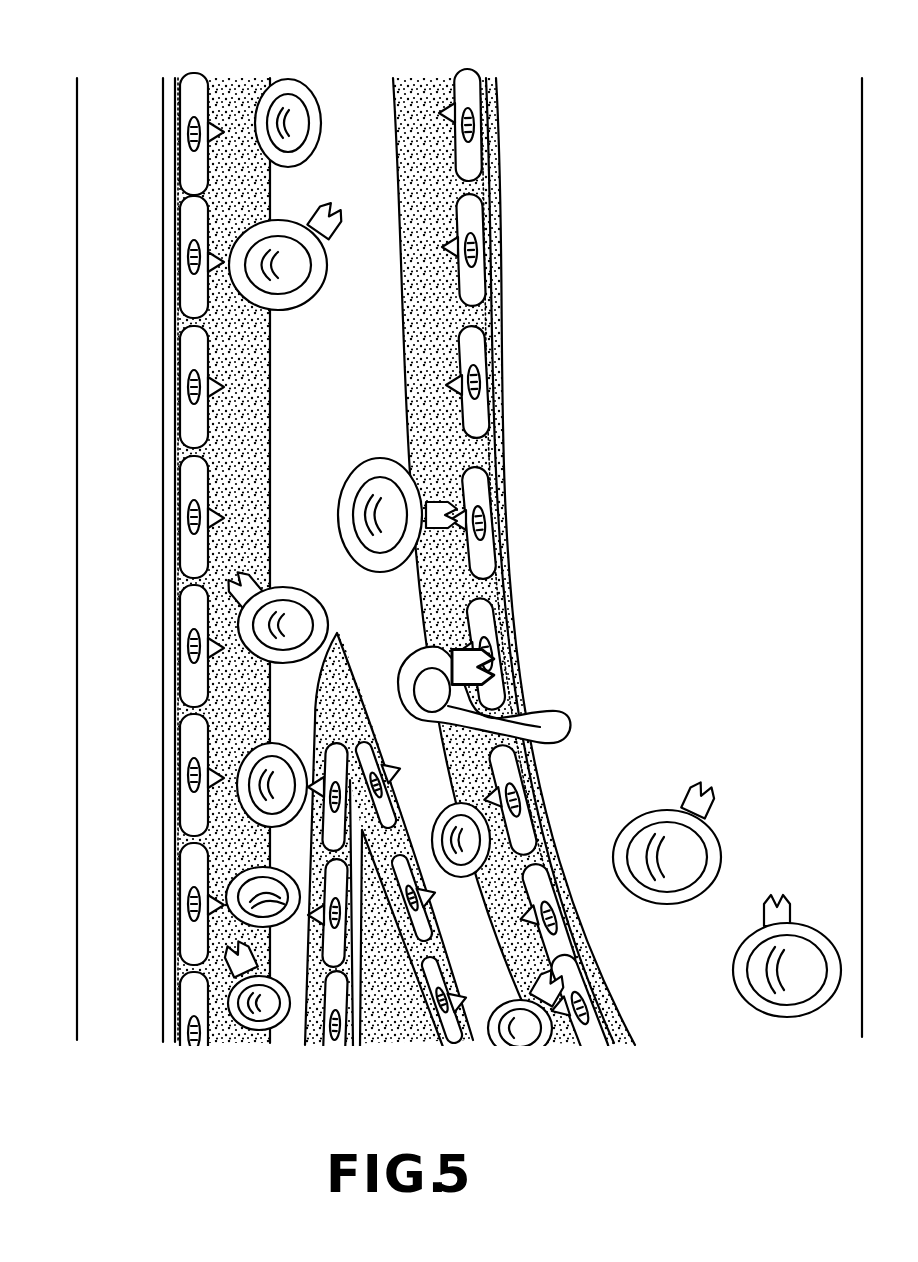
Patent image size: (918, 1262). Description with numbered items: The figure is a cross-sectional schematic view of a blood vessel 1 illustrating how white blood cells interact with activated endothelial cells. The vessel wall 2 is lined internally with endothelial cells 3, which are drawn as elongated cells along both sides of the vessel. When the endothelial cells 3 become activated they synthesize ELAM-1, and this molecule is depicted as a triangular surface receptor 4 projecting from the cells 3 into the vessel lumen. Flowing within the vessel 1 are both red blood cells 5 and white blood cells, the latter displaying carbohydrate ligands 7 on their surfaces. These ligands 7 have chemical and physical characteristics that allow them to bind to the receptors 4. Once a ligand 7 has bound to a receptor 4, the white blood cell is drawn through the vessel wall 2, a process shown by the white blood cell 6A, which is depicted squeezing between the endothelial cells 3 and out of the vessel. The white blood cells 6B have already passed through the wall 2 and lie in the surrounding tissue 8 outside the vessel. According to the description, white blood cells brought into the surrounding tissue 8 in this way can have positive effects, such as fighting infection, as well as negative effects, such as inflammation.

The blood vessel 1 is at (423, 82).
The vessel wall 2 is at (505, 110).
The endothelial cells 3 is at (194, 93).
The triangular surface receptor 4 is at (197, 238).
The red blood cells 5 is at (287, 82).
The white blood cell 6A is at (405, 661).
The white blood cells 6B is at (730, 835).
The carbohydrate ligands 7 is at (332, 240).
The surrounding tissue 8 is at (115, 608).